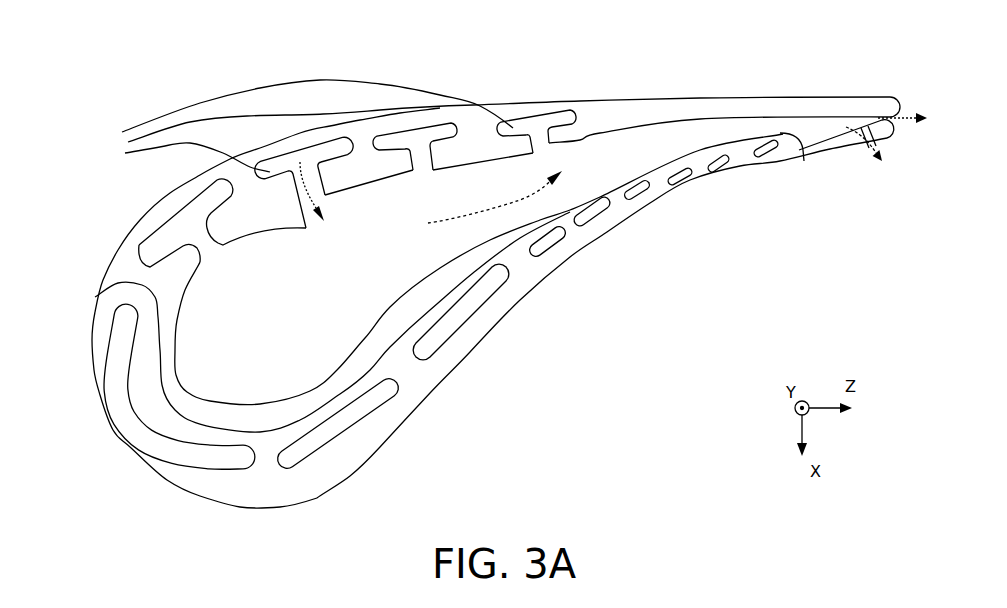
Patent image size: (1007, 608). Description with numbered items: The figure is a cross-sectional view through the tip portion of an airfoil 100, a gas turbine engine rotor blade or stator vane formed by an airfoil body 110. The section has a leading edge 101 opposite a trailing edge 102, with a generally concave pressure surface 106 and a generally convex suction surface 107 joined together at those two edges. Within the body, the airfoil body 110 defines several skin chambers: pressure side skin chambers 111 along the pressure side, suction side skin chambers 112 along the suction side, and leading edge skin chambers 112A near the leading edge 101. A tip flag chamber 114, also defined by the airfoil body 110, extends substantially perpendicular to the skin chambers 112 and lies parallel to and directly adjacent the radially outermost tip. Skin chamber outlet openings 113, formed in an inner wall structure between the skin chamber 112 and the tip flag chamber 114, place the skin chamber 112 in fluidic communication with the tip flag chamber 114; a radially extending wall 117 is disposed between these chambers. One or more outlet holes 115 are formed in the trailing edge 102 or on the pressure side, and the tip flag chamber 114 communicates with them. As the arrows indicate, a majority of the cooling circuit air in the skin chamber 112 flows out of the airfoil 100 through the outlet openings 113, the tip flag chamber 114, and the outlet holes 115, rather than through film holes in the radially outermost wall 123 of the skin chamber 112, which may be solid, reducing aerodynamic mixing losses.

The airfoil 100 is at (138, 44).
The leading edge 101 is at (117, 423).
The trailing edge 102 is at (898, 113).
The pressure surface 106 is at (587, 243).
The suction surface 107 is at (517, 103).
The airfoil body 110 is at (597, 117).
The pressure side skin chambers 111 is at (452, 314).
The suction side skin chambers 112 is at (187, 227).
The leading edge skin chambers 112A is at (177, 430).
The skin chamber outlet openings 113 is at (213, 243).
The tip flag chamber 114 is at (288, 341).
The outlet holes 115 is at (901, 122).
The radially extending wall 117 is at (360, 192).
The radially outermost wall 123 is at (133, 248).